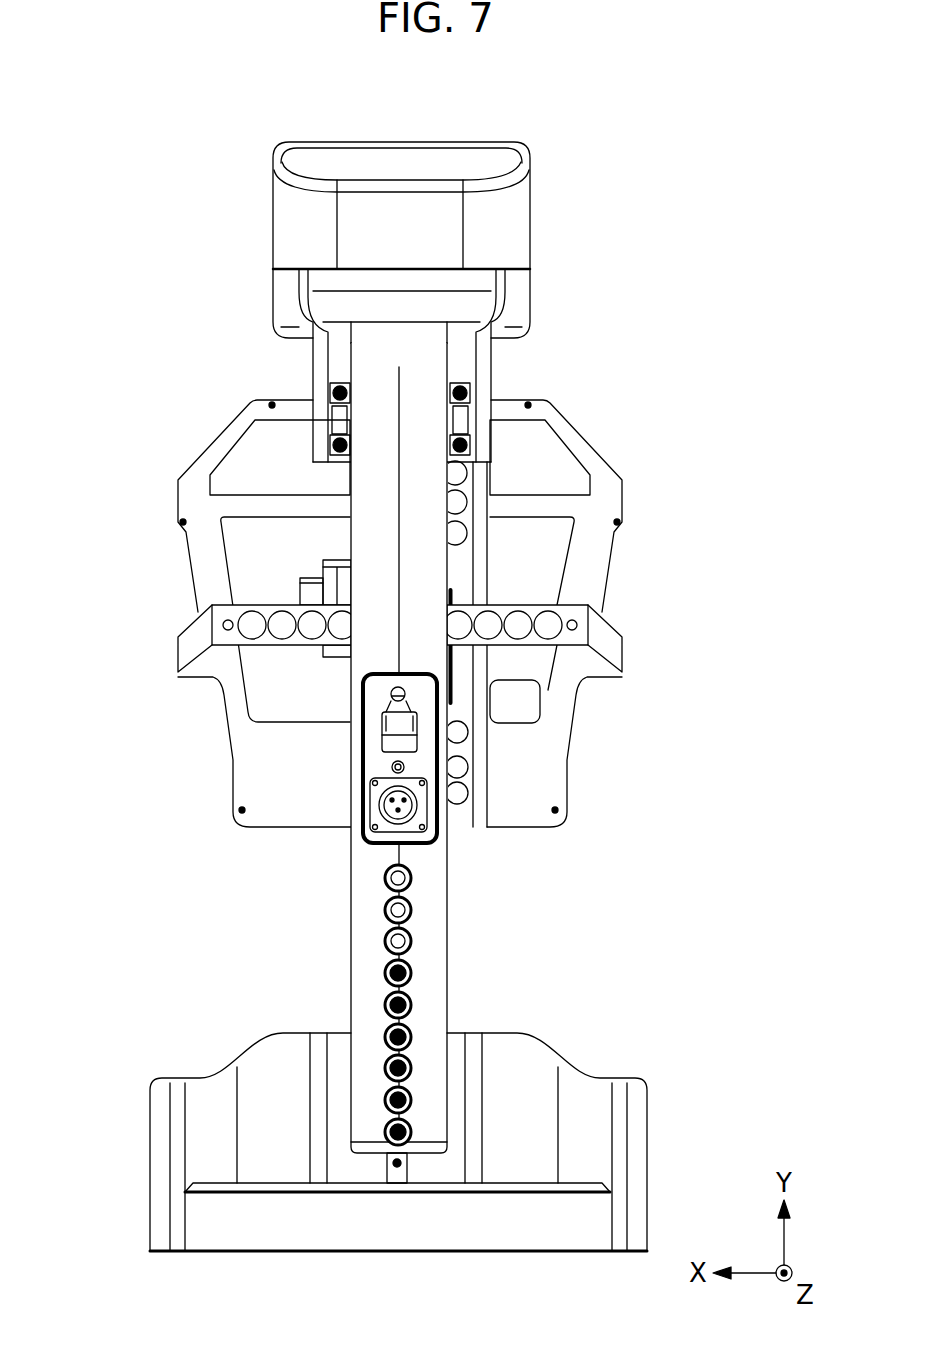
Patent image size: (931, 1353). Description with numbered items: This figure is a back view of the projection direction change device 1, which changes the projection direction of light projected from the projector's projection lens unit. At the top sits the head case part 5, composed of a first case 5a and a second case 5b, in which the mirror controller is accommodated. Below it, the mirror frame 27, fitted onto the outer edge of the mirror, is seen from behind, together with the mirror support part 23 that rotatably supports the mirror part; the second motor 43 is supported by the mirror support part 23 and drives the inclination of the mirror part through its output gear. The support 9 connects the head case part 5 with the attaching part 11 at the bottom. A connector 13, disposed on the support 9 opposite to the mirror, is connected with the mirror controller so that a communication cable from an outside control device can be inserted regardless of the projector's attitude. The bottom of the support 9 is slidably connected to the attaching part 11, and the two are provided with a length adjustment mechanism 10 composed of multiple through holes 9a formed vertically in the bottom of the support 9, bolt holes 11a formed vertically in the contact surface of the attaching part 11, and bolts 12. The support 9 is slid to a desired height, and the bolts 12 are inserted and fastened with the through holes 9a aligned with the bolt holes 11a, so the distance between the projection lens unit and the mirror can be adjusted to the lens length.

The projection direction change device 1 is at (407, 110).
The head case part 5 is at (200, 208).
The first case 5a is at (290, 252).
The second case 5b is at (286, 302).
The mirror frame 27 is at (187, 502).
The second motor 43 is at (300, 593).
The mirror support part 23 is at (187, 648).
The connector 13 is at (418, 763).
The support 9 is at (430, 907).
The through holes 9a is at (415, 938).
The length adjustment mechanism 10 is at (598, 999).
The bolts 12 is at (415, 1002).
The attaching part 11 is at (160, 1147).
The bolt holes 11a is at (408, 1163).